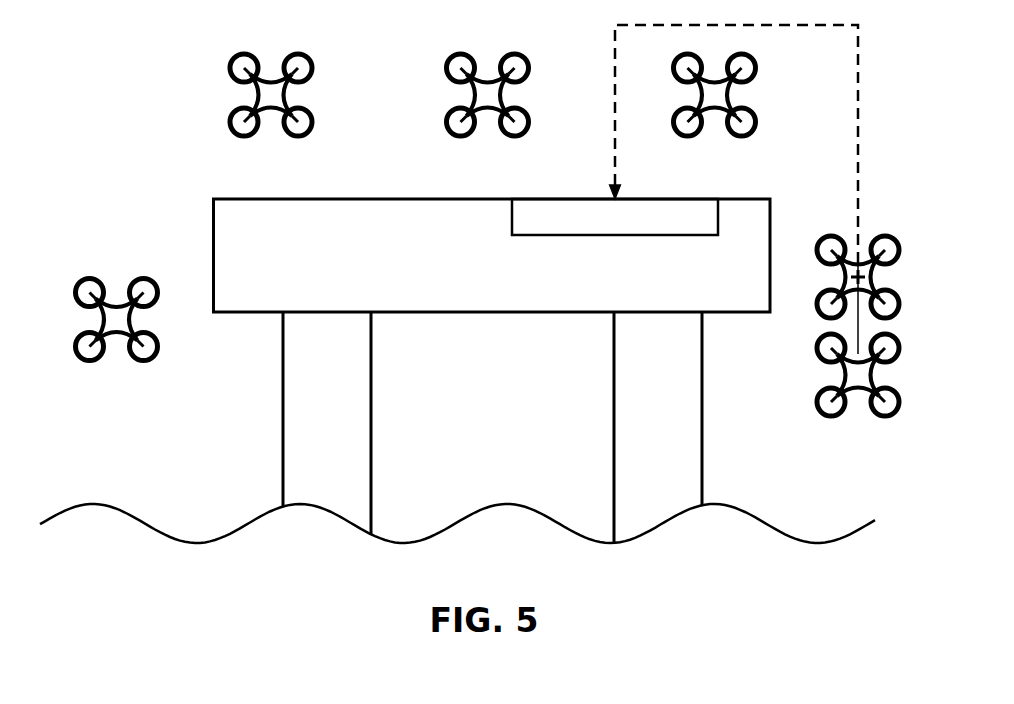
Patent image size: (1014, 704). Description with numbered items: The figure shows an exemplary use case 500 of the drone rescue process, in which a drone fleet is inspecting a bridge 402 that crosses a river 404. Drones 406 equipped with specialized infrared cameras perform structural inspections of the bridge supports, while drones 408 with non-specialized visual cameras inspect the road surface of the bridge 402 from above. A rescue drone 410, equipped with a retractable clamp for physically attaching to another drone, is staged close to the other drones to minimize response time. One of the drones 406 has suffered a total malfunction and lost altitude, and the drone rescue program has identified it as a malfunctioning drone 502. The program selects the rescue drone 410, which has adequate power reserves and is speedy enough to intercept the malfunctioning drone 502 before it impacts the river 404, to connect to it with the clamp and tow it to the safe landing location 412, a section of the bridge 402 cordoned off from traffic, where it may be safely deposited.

The exemplary use case 500 is at (145, 83).
The bridge 402 is at (473, 266).
The river 404 is at (457, 549).
The drones 406 is at (117, 336).
The drones 408 is at (493, 111).
The rescue drone 410 is at (888, 295).
The safe landing location 412 is at (596, 228).
The malfunctioning drone 502 is at (888, 375).